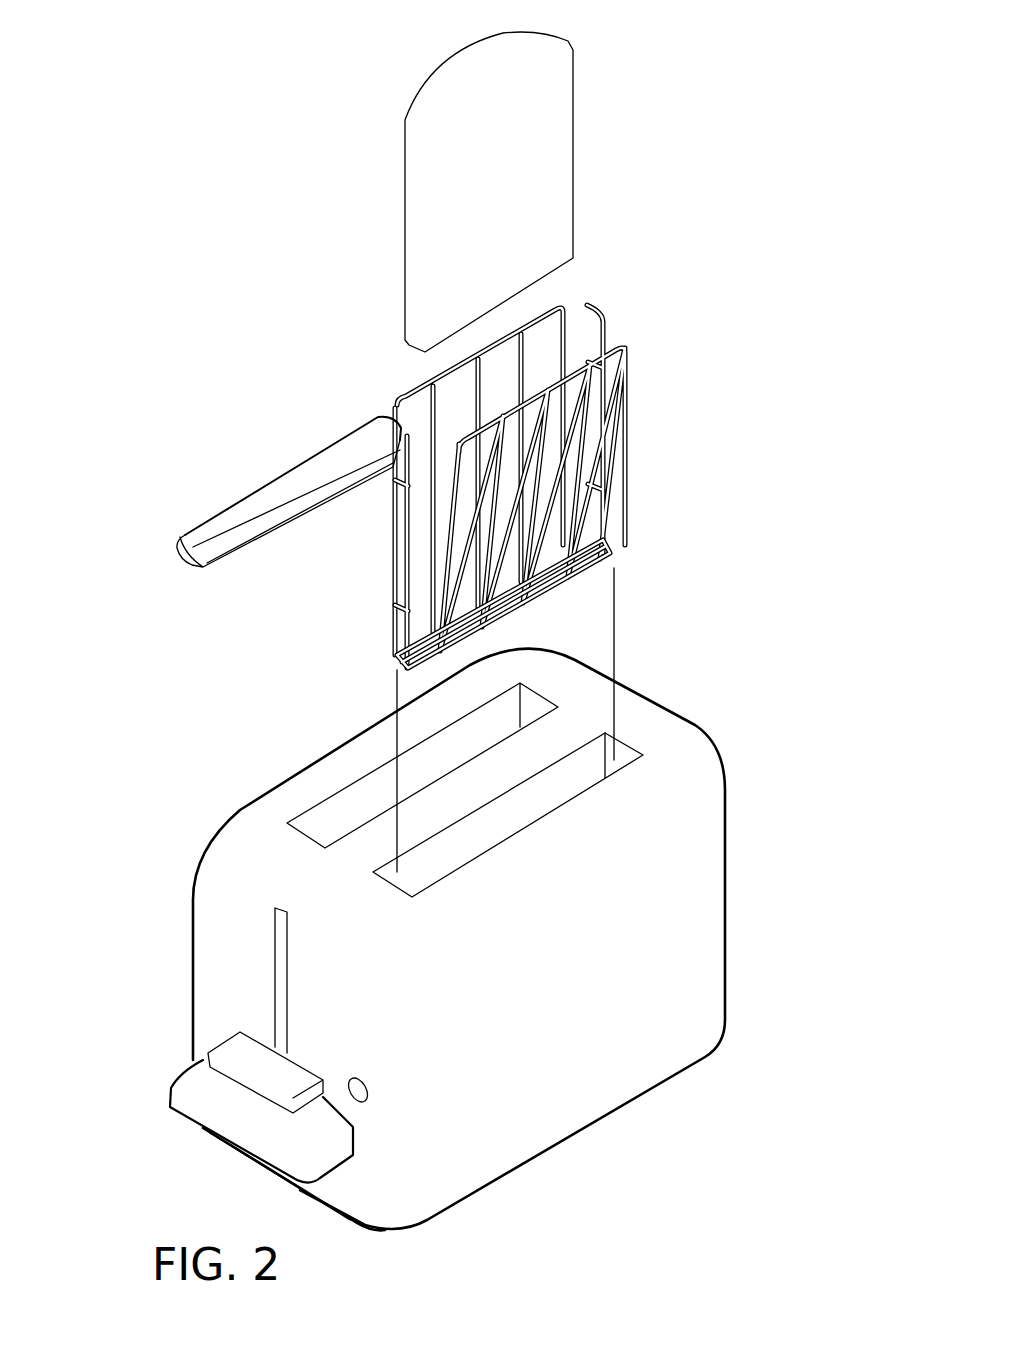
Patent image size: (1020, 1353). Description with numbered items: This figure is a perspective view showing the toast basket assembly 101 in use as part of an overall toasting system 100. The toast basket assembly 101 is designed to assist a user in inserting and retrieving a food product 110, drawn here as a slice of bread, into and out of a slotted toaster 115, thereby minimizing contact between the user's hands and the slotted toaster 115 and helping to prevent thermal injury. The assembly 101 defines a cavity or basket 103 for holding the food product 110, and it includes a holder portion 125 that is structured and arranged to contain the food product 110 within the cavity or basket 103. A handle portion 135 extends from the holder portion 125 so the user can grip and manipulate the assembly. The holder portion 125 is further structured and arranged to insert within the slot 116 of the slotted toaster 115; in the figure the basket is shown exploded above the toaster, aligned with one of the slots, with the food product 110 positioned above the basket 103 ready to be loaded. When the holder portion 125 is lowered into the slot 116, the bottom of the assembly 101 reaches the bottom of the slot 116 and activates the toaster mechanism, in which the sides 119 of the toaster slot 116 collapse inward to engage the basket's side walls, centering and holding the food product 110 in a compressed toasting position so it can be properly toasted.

The toasting system 100 is at (222, 320).
The toast basket assembly 101 is at (540, 448).
The cavity or basket 103 is at (538, 340).
The food product 110 is at (575, 117).
The slotted toaster 115 is at (728, 836).
The slot 116 is at (620, 745).
The sides of the toaster slot 119 is at (548, 784).
The holder portion 125 is at (410, 378).
The handle portion 135 is at (295, 462).